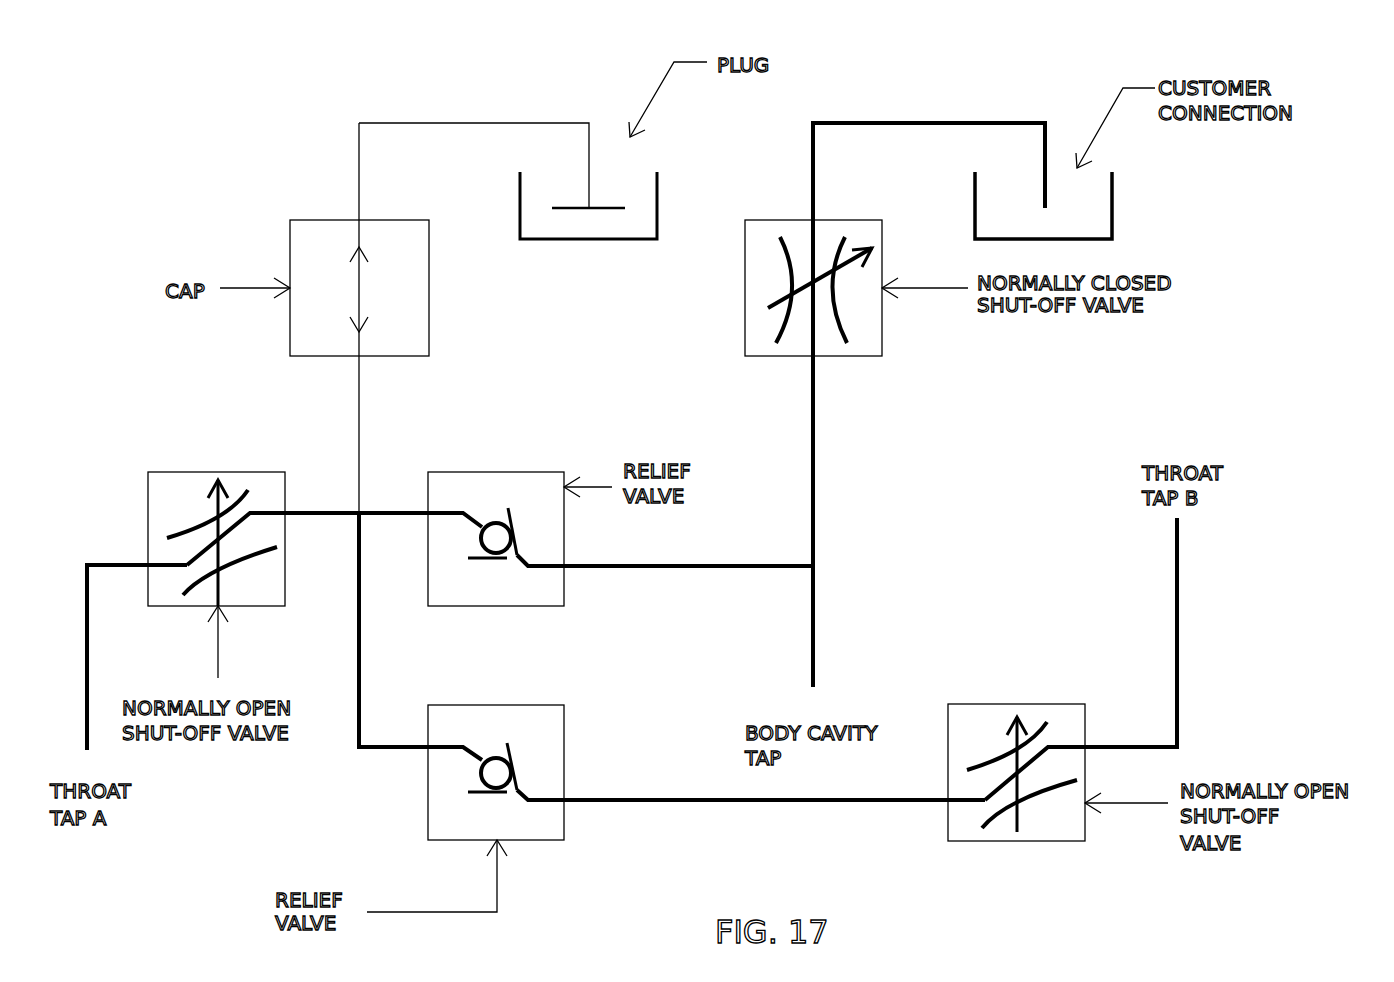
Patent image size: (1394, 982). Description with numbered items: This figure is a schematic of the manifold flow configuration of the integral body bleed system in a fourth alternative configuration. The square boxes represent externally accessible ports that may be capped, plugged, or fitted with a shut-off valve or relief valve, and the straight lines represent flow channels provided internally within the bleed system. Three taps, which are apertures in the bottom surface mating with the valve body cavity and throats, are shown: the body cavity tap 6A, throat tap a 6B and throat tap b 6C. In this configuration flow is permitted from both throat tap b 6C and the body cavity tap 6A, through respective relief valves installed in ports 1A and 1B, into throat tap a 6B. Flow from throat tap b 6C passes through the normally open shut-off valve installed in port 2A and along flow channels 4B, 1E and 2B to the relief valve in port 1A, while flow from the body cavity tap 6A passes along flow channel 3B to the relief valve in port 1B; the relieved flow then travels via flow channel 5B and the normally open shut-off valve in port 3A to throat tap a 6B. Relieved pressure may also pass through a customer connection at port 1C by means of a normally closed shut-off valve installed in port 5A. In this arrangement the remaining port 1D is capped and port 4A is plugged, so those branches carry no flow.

The port 1A is at (496, 759).
The port 1B is at (496, 524).
The port 1C is at (962, 223).
The port 1D is at (377, 318).
The flow channel 1E is at (790, 815).
The port 2A is at (1016, 759).
The flow channel 2B is at (642, 815).
The port 3A is at (315, 524).
The flow channel 3B is at (707, 568).
The port 4A is at (508, 165).
The flow channel 4B is at (922, 815).
The port 5A is at (813, 272).
The flow channel 5B is at (420, 636).
The body cavity tap 6A is at (829, 538).
The throat tap a 6B is at (118, 671).
The throat tap b 6C is at (1131, 591).